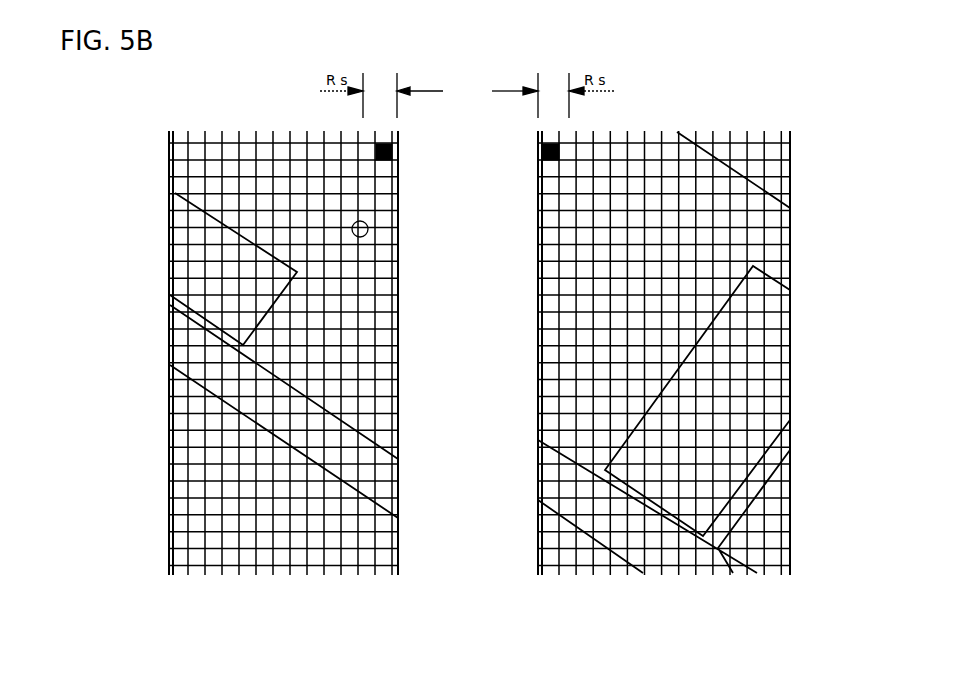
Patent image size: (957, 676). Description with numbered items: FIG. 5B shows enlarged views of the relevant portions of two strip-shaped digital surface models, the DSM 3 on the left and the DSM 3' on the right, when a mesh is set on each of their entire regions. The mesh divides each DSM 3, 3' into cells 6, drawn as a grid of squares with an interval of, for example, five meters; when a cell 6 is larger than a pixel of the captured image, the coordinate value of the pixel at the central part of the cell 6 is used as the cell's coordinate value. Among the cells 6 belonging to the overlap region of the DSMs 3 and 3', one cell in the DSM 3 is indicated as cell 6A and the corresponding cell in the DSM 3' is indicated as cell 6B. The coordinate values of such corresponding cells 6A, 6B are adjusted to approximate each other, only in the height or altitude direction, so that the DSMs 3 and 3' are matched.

The DSM 3 is at (233, 353).
The DSM 3' is at (707, 353).
The cell 6 is at (383, 560).
The cell 6A is at (393, 146).
The cell 6B is at (538, 153).